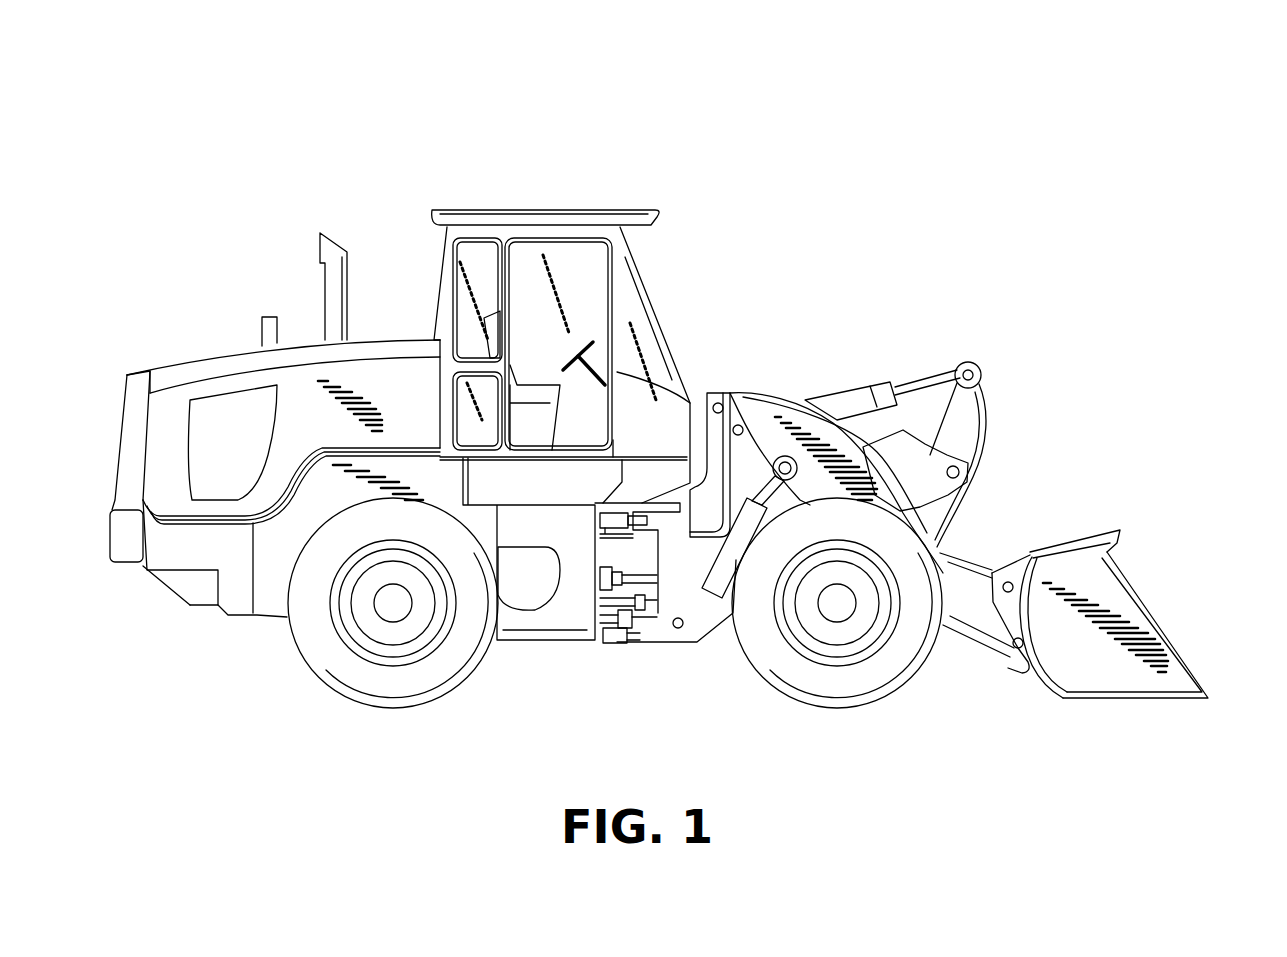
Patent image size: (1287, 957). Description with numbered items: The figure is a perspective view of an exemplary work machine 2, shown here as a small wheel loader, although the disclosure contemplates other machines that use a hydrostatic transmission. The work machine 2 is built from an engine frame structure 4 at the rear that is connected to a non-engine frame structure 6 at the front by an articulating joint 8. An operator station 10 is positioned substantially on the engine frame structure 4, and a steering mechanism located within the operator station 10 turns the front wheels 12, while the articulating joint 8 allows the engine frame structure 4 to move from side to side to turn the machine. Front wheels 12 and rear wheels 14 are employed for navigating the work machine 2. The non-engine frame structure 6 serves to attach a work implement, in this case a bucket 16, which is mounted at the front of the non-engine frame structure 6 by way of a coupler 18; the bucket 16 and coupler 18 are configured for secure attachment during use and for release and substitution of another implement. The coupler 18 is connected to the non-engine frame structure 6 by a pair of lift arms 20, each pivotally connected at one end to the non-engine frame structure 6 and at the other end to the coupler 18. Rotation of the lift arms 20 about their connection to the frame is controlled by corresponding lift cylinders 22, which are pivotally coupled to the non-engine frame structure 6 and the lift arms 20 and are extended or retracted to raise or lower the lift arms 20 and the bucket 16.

The work machine 2 is at (242, 156).
The engine frame structure 4 is at (198, 587).
The non-engine frame structure 6 is at (736, 226).
The articulating joint 8 is at (620, 632).
The operator station 10 is at (581, 216).
The front wheels 12 is at (838, 677).
The rear wheels 14 is at (410, 677).
The bucket 16 is at (1152, 613).
The coupler 18 is at (1037, 677).
The lift arms 20 is at (795, 418).
The lift cylinders 22 is at (872, 398).